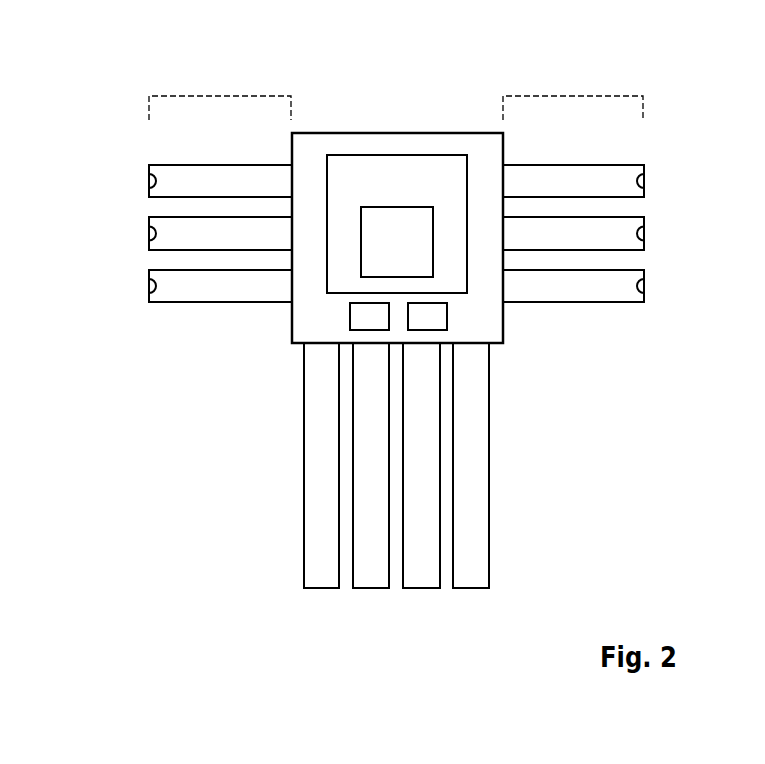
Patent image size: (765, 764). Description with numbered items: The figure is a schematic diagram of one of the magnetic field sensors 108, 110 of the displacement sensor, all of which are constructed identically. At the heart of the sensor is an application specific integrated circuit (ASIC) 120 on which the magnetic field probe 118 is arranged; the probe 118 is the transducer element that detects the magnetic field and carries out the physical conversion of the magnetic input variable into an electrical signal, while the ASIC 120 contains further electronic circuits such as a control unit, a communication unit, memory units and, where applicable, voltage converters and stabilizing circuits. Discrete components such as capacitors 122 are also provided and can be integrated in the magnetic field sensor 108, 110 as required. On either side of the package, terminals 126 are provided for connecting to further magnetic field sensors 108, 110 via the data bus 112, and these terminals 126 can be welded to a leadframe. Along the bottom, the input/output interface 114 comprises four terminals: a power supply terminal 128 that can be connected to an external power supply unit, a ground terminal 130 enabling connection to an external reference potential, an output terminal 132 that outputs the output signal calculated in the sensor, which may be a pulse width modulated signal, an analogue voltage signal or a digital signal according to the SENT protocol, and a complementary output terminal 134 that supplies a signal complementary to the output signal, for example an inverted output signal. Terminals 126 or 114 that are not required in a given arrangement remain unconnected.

The first magnetic field sensor 108 is at (353, 358).
The second magnetic field sensor 110 is at (397, 238).
The data bus 112 is at (218, 69).
The input/output interface 114 is at (397, 510).
The magnetic field probe 118 is at (372, 267).
The application specific integrated circuit (ASIC) 120 is at (455, 285).
The capacitors 122 is at (356, 316).
The terminals 126 is at (588, 173).
The power supply terminal 128 is at (506, 465).
The ground terminal 130 is at (312, 550).
The output terminal 132 is at (420, 588).
The complementary output terminal 134 is at (369, 588).